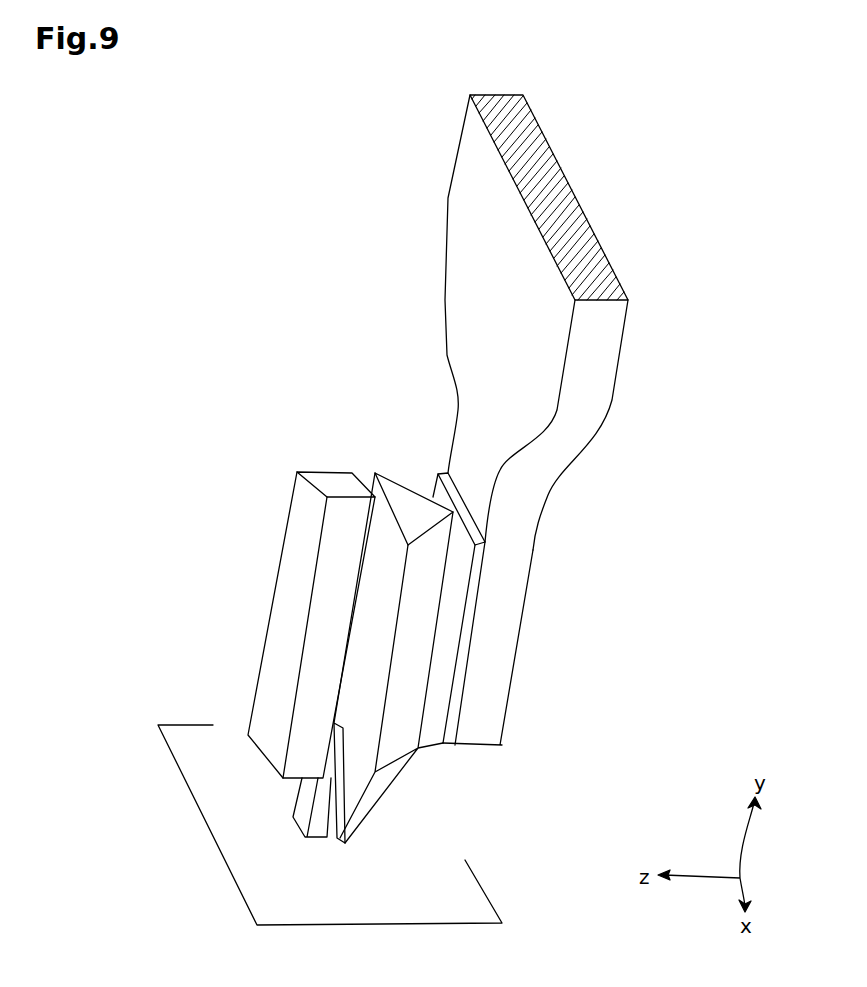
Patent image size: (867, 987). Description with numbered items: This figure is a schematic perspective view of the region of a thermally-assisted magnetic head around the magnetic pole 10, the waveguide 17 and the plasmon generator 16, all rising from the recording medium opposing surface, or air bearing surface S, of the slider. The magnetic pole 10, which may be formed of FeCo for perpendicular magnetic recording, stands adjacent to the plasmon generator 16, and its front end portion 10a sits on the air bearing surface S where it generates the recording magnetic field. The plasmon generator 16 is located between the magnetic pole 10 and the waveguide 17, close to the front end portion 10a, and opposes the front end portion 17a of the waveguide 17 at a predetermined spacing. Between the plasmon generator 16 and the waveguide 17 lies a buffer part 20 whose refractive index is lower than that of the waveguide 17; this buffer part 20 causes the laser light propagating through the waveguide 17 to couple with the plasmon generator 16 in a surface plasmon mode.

The magnetic pole 10 is at (283, 623).
The front end portion of the magnetic pole 10a is at (300, 805).
The plasmon generator 16 is at (405, 673).
The waveguide 17 is at (530, 510).
The front end portion of the waveguide 17a is at (480, 730).
The buffer part 20 is at (478, 585).
The air bearing surface S is at (485, 890).